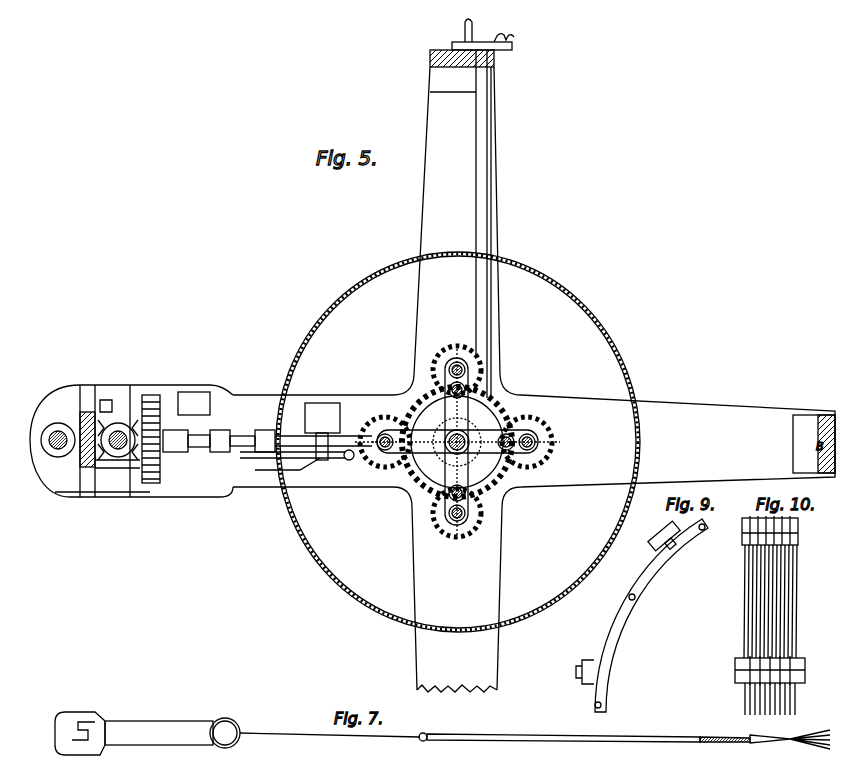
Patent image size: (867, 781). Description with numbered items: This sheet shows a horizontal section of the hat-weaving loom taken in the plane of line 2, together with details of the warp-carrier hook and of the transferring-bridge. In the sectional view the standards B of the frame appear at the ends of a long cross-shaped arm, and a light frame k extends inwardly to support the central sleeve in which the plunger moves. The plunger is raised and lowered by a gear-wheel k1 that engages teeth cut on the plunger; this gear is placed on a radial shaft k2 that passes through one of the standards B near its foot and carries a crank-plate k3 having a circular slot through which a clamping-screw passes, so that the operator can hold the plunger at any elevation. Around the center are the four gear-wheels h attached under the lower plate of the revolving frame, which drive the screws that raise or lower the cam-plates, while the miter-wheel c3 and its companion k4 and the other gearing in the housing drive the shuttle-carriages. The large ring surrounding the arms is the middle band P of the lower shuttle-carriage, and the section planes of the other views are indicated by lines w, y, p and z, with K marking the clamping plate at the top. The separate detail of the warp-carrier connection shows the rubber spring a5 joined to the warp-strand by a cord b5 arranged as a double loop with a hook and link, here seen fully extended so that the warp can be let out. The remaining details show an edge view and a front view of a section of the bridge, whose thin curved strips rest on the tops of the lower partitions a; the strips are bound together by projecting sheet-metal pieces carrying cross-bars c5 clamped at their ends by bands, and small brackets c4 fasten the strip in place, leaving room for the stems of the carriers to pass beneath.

In FIG. 5, the top plate K is at (482, 35).
In FIG. 5, the line 2 is at (504, 38).
In FIG. 5, the standard B is at (462, 58).
In FIG. 5, the light frame k is at (482, 232).
In FIG. 5, the gear-wheel h is at (428, 345).
In FIG. 5, the gear-wheel k1 is at (457, 370).
In FIG. 5, the radial shaft k2 is at (457, 513).
In FIG. 5, the crank-plate k3 is at (385, 442).
In FIG. 5, the right pinion k4 is at (525, 442).
In FIG. 5, the middle band P is at (458, 442).
In FIG. 5, the partition a is at (58, 448).
In FIG. 5, the wheel z is at (118, 446).
In FIG. 5, the line y is at (170, 412).
In FIG. 5, the line w is at (297, 431).
In FIG. 5, the lever p is at (289, 454).
In FIG. 9, the miter-wheel c3 is at (666, 539).
In FIG. 9, the bracket c4 is at (585, 672).
In FIG. 10, the cross-bar c5 is at (775, 530).
In FIG. 7, the rubber spring a5 is at (147, 733).
In FIG. 7, the cord b5 is at (535, 734).